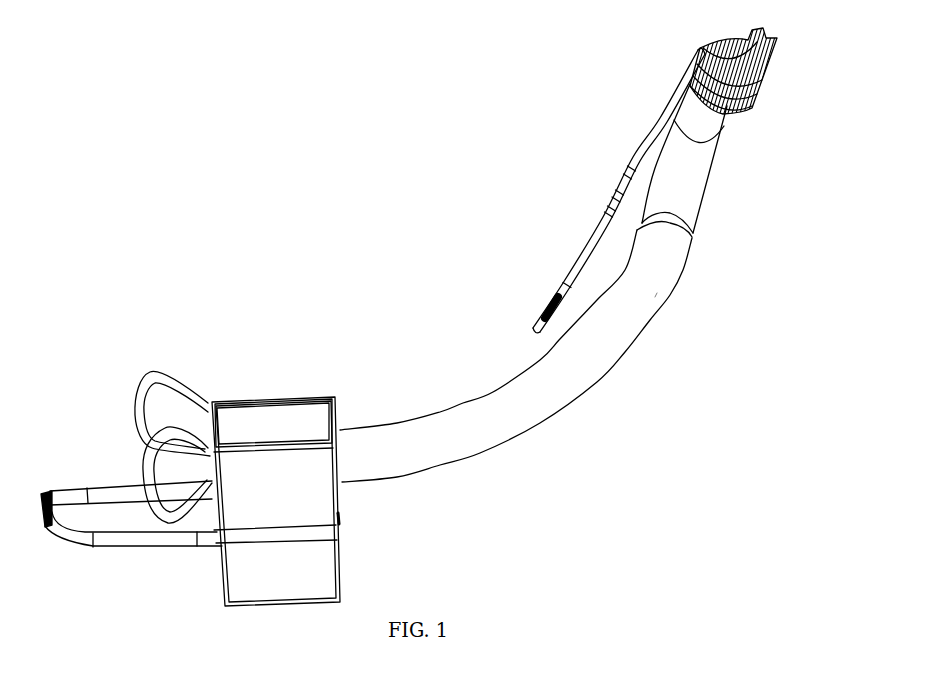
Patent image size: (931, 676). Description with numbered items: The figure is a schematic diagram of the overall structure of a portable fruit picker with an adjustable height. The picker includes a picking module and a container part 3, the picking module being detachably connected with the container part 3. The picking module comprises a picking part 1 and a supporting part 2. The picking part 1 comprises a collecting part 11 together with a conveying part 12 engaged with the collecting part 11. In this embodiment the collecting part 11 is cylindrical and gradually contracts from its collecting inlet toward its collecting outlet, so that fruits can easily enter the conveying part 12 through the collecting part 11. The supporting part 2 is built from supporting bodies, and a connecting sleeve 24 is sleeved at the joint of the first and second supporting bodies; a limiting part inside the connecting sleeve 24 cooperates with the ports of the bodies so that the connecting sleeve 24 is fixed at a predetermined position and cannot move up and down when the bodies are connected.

The picking part 1 is at (742, 118).
The collecting part 11 is at (712, 44).
The conveying part 12 is at (657, 296).
The supporting part 2 is at (633, 153).
The connecting sleeve 24 is at (617, 186).
The container part 3 is at (298, 391).